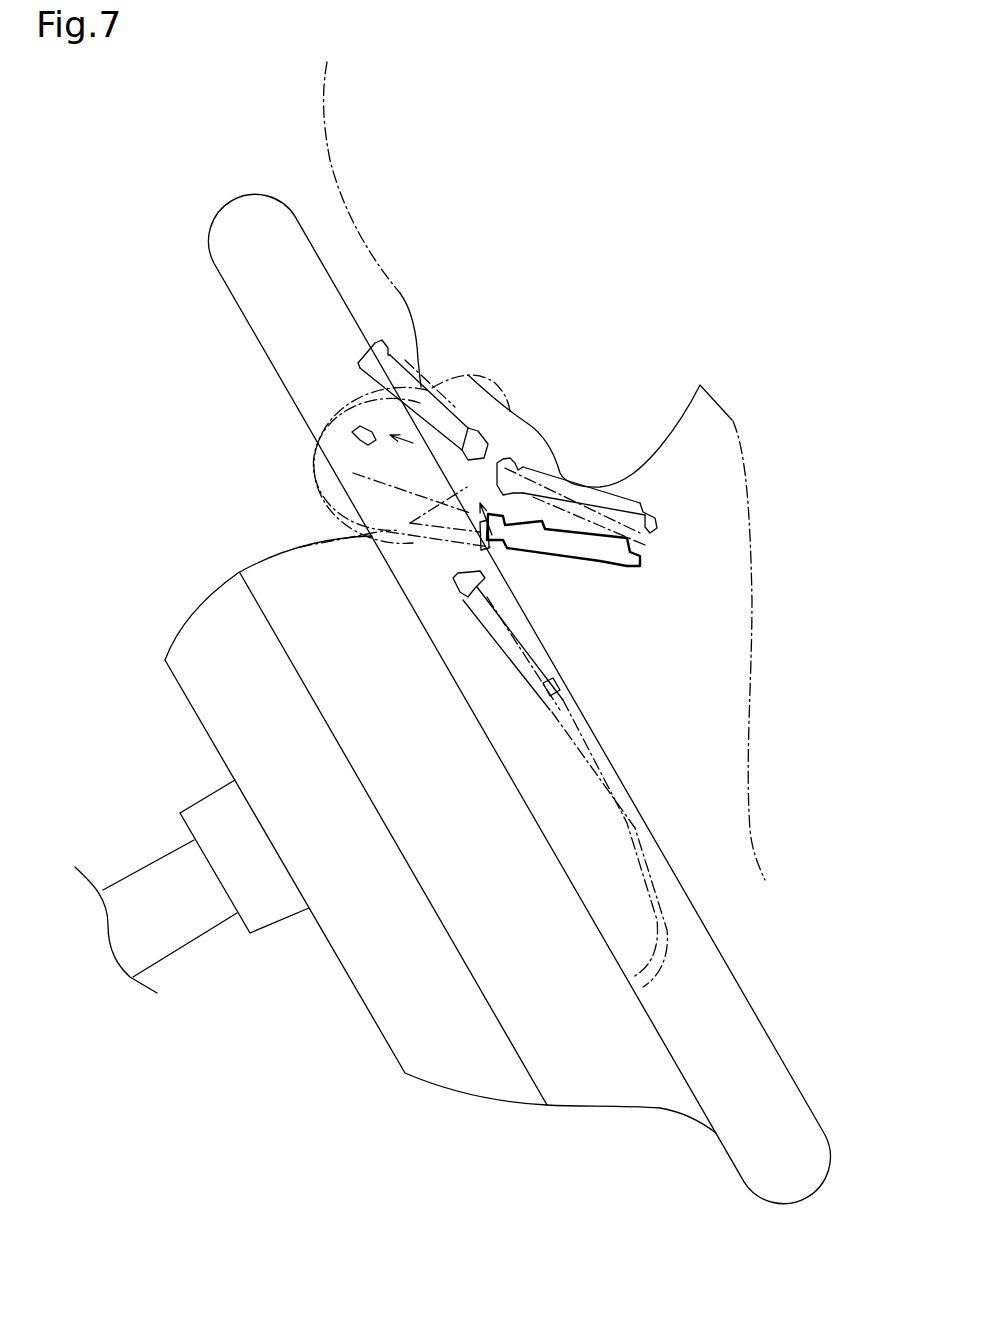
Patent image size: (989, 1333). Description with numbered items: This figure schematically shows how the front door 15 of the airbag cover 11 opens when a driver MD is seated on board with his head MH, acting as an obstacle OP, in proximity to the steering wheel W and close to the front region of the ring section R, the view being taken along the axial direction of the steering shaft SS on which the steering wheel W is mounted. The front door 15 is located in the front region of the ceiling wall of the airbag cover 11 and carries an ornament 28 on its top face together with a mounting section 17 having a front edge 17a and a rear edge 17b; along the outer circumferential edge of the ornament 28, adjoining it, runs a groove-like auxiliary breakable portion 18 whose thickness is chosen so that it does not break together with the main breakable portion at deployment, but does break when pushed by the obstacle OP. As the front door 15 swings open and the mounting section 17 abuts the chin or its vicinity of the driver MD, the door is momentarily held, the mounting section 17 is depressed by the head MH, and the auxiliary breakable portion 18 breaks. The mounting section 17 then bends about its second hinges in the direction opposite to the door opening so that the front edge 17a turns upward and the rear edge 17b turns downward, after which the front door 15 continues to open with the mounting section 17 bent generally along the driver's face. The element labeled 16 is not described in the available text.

The airbag cover 11 is at (640, 828).
The front door 15 is at (350, 458).
The seal lip 16 is at (370, 503).
The mounting section 17 is at (473, 504).
The front edge 17a is at (367, 352).
The rear edge 17b is at (470, 435).
The auxiliary breakable portion 18 is at (492, 548).
The ornament 28 is at (636, 543).
The ring section R is at (221, 290).
The steering wheel W is at (573, 1135).
The side sill SS is at (163, 937).
The driver MD is at (750, 433).
The head MH is at (420, 224).
The obstacle OP is at (326, 124).